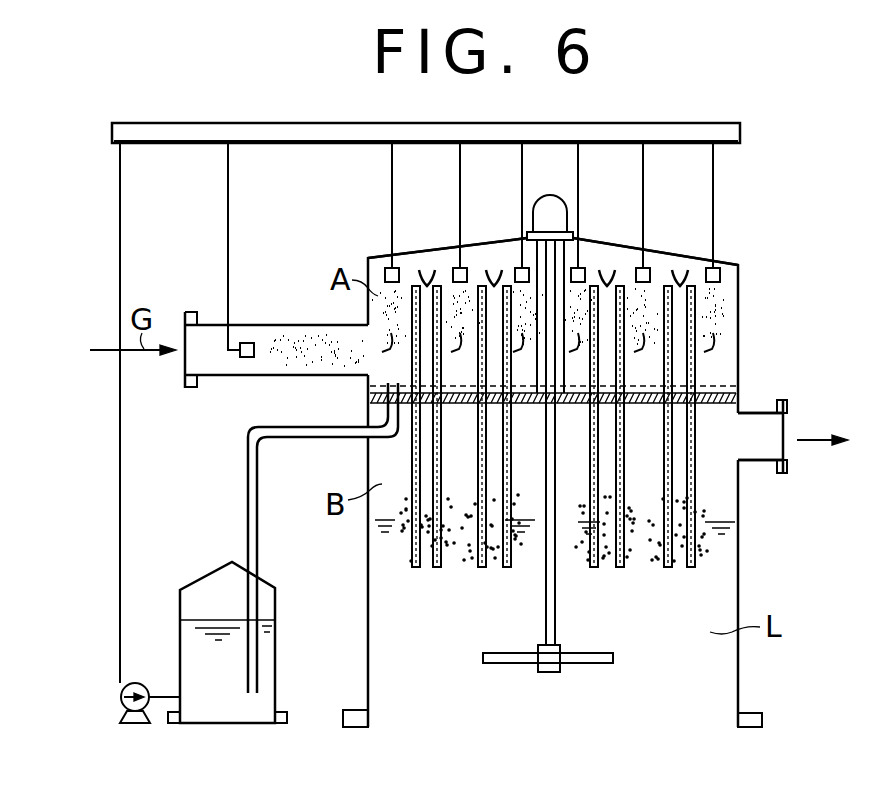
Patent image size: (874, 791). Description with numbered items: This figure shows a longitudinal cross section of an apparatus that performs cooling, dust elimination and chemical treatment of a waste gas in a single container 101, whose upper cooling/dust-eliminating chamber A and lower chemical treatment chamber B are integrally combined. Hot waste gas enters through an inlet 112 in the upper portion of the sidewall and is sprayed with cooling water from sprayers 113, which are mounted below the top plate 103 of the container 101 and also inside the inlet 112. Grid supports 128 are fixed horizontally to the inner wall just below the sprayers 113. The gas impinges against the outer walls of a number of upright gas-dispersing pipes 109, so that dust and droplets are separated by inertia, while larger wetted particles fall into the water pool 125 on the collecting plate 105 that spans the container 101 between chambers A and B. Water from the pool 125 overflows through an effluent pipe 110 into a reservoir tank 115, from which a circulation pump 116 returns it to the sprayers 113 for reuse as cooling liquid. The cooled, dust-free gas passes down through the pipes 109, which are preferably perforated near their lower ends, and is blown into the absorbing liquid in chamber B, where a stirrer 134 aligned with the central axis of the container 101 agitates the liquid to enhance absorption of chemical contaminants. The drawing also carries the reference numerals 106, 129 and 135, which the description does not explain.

The container 101 is at (738, 312).
The top plate 103 is at (577, 244).
The collecting plate 105 is at (738, 392).
The outlet pipe 106 is at (764, 463).
The gas-dispersing pipes 109 is at (695, 297).
The effluent pipe 110 is at (332, 435).
The inlet 112 is at (300, 325).
The sprayers 113 is at (386, 267).
The reservoir tank 115 is at (218, 722).
The circulation pump 116 is at (133, 714).
The water pool 125 is at (713, 390).
The grid supports 128 is at (722, 318).
The spray nozzles 129 is at (428, 264).
The stirrer 134 is at (586, 664).
The bubbles 135 is at (642, 564).